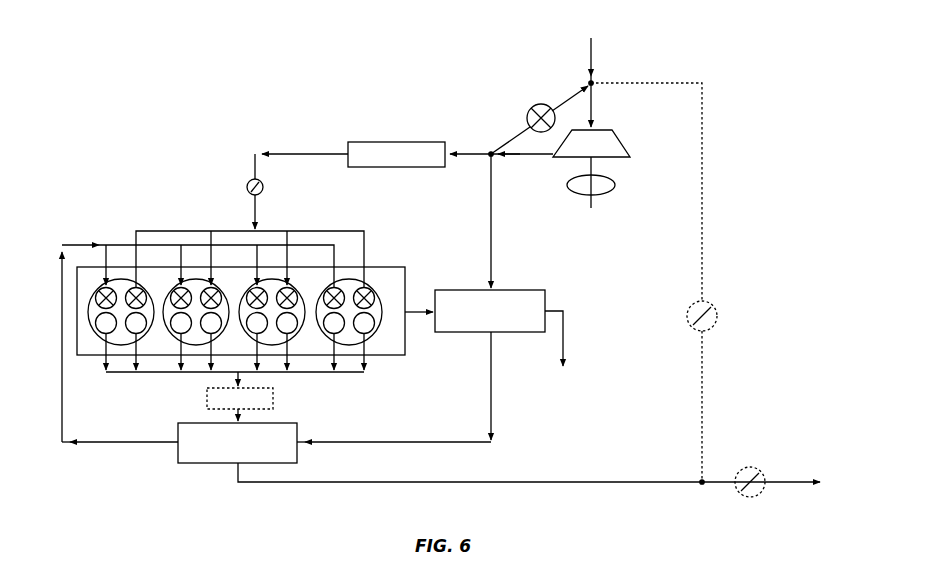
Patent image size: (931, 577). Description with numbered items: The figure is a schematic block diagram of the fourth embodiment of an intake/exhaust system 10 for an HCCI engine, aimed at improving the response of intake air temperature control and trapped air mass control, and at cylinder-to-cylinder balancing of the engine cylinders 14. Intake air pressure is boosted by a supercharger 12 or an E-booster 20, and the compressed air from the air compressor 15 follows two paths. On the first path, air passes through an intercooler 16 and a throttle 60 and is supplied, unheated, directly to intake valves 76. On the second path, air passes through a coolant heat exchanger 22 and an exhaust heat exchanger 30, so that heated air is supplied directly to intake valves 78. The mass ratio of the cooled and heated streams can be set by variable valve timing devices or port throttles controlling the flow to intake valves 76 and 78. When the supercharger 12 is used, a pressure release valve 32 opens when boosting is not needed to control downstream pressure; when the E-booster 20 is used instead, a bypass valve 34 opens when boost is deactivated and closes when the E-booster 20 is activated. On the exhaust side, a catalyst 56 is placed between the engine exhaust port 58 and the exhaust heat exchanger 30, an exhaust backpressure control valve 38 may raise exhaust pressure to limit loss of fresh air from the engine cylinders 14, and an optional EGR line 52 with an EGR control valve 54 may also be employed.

The intake/exhaust system 10 is at (796, 52).
The supercharger 12 is at (591, 194).
The engine cylinders 14 is at (88, 312).
The air compressor 15 is at (612, 158).
The intercooler 16 is at (405, 142).
The E-booster 20 is at (591, 182).
The coolant heat exchanger 22 is at (505, 290).
The exhaust heat exchanger 30 is at (197, 464).
The pressure release valve 32 is at (535, 103).
The bypass valve 34 is at (539, 120).
The exhaust backpressure control valve 38 is at (738, 495).
The EGR line 52 is at (703, 191).
The EGR control valve 54 is at (714, 326).
The catalyst 56 is at (274, 403).
The engine exhaust port 58 is at (232, 376).
The throttle 60 is at (250, 180).
The intake valves 76 is at (141, 290).
The intake valves 78 is at (96, 296).